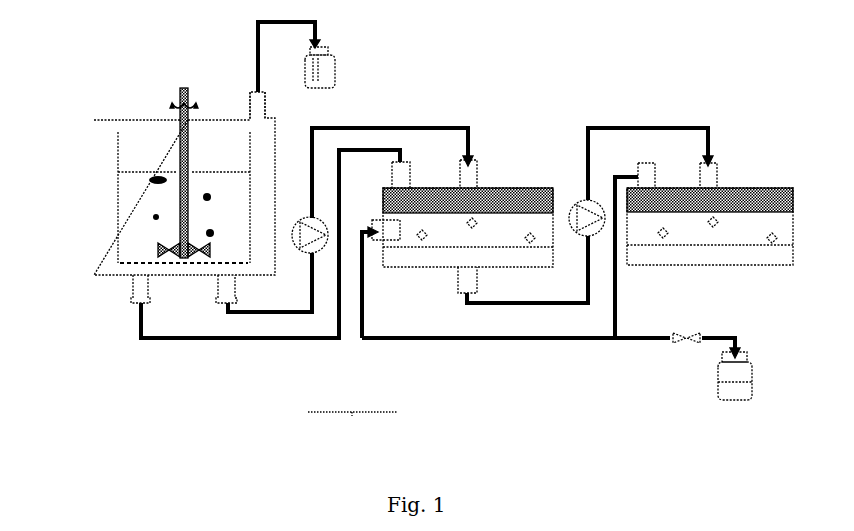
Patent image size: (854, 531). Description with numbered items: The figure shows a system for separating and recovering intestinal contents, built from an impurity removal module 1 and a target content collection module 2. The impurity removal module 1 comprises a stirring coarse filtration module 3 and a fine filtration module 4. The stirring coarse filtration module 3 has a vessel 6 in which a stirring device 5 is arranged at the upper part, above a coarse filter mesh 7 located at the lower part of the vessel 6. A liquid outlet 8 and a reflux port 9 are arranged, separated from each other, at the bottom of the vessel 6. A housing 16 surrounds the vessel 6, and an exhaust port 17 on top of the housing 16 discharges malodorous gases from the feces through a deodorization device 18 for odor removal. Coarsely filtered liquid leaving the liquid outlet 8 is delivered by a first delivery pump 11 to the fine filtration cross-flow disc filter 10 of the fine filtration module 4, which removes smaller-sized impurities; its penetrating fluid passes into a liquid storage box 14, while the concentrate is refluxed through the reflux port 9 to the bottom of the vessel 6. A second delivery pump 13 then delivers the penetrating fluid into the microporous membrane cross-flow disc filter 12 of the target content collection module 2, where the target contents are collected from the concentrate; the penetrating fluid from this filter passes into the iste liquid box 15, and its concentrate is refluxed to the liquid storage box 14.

The impurity removal module 1 is at (352, 430).
The target content collection module 2 is at (765, 283).
The stirring coarse filtration module 3 is at (170, 208).
The fine filtration module 4 is at (430, 293).
The stirring device 5 is at (178, 92).
The vessel 6 is at (118, 153).
The coarse filter mesh 7 is at (132, 257).
The liquid outlet 8 is at (222, 295).
The reflux port 9 is at (135, 293).
The fine filtration cross-flow disc filter 10 is at (500, 188).
The first delivery pump 11 is at (318, 218).
The microporous membrane cross-flow disc filter 12 is at (732, 188).
The second delivery pump 13 is at (612, 177).
The liquid storage box 14 is at (510, 267).
The iste liquid box 15 is at (657, 267).
The housing 16 is at (92, 147).
The exhaust port 17 is at (250, 97).
The deodorization device 18 is at (338, 72).